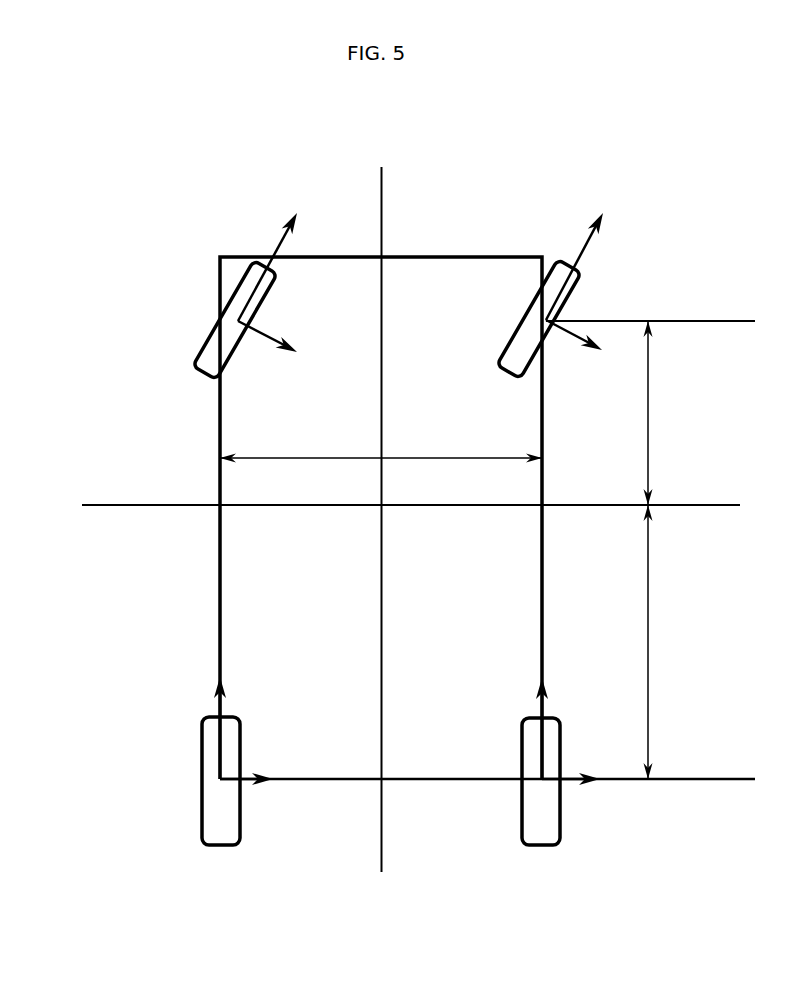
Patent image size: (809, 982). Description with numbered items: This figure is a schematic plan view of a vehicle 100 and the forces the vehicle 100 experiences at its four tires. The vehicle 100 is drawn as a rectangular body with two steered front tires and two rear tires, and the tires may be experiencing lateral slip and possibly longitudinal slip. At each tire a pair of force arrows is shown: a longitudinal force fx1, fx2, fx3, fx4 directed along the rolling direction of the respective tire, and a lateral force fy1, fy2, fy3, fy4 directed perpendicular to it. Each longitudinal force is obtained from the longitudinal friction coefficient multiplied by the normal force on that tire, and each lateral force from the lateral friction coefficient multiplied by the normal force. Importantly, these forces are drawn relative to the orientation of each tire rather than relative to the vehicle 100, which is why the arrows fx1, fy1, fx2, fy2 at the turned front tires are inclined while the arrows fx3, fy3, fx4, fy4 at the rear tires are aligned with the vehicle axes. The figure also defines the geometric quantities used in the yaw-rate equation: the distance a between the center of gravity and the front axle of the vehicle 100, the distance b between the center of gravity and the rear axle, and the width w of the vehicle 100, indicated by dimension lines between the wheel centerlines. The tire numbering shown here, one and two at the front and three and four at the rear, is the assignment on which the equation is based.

The vehicle 100 is at (218, 587).
The distance between the center of gravity and a front axle a is at (680, 413).
The distance between the center of gravity and a rear axle b is at (684, 642).
The width of the vehicle w is at (381, 428).
The longitudinal force at tire one fx1 is at (307, 250).
The lateral force at tire one fy1 is at (269, 363).
The longitudinal force at tire two fx2 is at (614, 250).
The lateral force at tire two fy2 is at (580, 363).
The longitudinal force at tire three fx3 is at (257, 719).
The lateral force at tire three fy3 is at (262, 817).
The longitudinal force at tire four fx4 is at (581, 722).
The lateral force at tire four fy4 is at (585, 813).